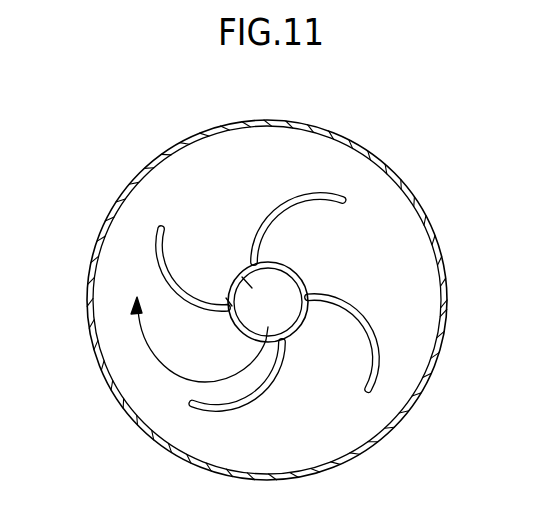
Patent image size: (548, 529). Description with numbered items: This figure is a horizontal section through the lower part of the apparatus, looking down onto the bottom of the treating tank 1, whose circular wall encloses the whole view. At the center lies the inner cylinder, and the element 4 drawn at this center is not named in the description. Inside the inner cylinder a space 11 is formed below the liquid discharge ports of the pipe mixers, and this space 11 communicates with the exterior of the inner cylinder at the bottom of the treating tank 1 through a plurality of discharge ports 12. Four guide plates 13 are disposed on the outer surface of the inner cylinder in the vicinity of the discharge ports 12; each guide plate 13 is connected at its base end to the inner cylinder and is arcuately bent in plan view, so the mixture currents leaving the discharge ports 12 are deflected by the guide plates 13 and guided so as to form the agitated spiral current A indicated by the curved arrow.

The treating tank 1 is at (434, 229).
The central hub / inner tube 4 is at (299, 273).
The space 11 is at (252, 288).
The discharge ports 12 is at (226, 298).
The guide plates 13 is at (162, 266).
The agitated spiral current A is at (157, 363).